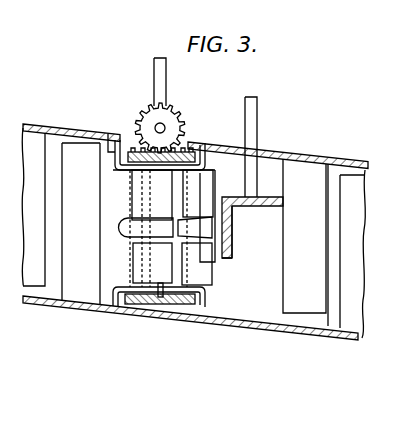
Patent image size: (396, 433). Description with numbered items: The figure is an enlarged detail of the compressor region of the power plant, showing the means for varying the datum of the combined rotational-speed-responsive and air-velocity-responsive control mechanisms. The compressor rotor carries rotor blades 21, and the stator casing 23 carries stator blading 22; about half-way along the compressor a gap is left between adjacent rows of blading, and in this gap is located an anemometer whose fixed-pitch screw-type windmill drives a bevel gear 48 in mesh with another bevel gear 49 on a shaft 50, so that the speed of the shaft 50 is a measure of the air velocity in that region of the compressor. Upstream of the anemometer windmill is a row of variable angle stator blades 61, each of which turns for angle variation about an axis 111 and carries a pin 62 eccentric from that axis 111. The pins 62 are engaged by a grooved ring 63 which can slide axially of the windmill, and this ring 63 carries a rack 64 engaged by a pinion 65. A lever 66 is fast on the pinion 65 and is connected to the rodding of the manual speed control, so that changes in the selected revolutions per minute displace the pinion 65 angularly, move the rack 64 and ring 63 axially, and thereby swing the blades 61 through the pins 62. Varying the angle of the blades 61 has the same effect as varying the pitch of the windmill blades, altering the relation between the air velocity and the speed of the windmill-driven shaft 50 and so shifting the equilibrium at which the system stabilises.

The rotor blades 21 is at (75, 296).
The stator blading 22 is at (316, 176).
The stator casing 23 is at (297, 156).
The bevel gear 48 is at (232, 252).
The bevel gear 49 is at (252, 208).
The shaft 50 is at (252, 125).
The variable angle stator blades 61 is at (158, 202).
The pins 62 is at (166, 306).
The grooved ring 63 is at (135, 158).
The rack 64 is at (133, 141).
The pinion 65 is at (186, 129).
The lever 66 is at (165, 90).
The axes 111 is at (130, 170).